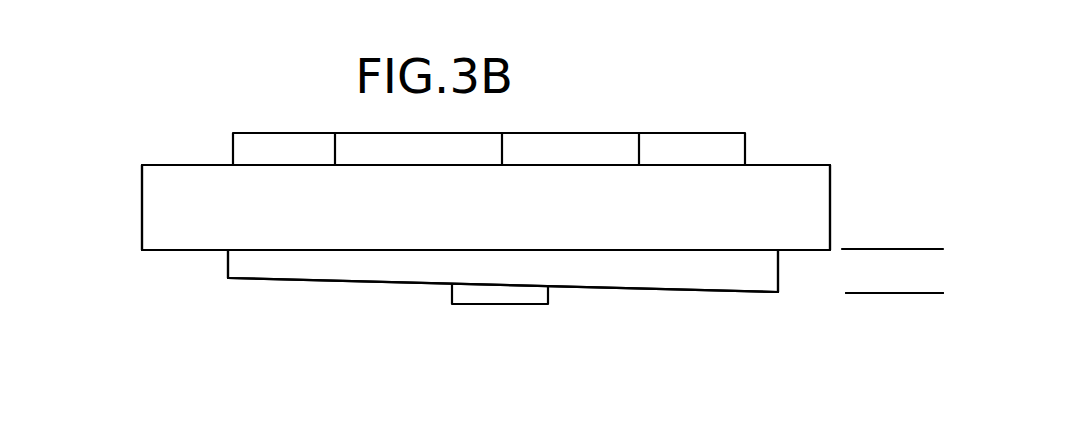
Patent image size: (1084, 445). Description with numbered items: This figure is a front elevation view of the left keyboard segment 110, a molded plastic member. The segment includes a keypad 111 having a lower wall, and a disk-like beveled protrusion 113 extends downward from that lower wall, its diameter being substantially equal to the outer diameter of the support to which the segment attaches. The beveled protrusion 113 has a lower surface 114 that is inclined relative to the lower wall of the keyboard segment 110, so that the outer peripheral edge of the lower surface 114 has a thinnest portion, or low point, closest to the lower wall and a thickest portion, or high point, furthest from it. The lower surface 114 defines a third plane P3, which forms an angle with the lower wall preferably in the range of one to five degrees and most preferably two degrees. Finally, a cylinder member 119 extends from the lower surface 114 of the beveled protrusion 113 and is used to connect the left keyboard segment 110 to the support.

The left keyboard segment 110 is at (126, 204).
The keypad 111 is at (831, 217).
The beveled protrusion 113 is at (779, 272).
The lower surface 114 is at (678, 290).
The cylinder member 119 is at (550, 297).
The third plane P3 is at (896, 298).